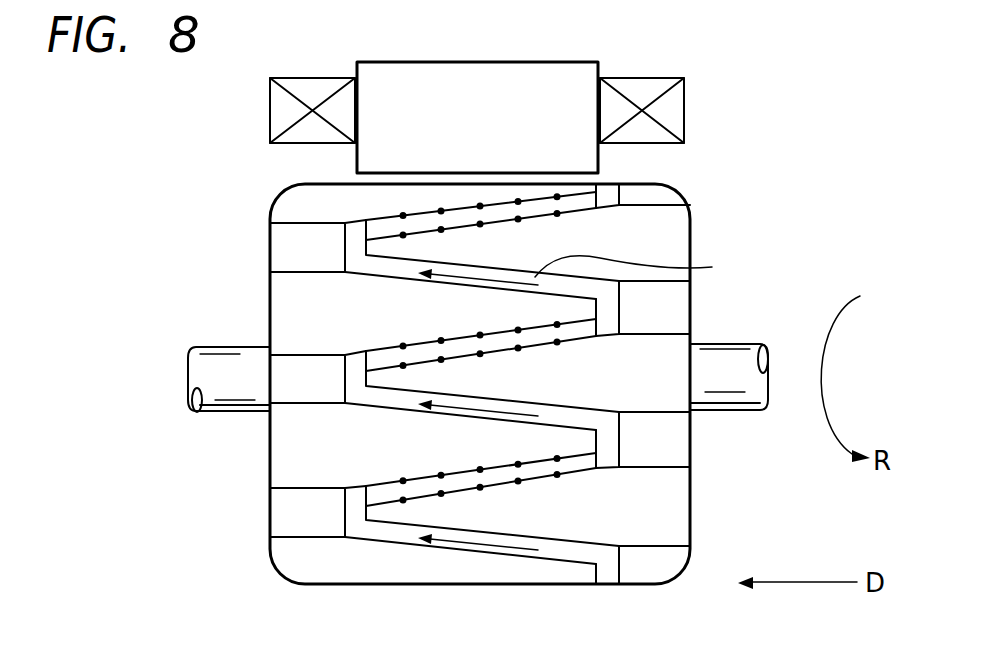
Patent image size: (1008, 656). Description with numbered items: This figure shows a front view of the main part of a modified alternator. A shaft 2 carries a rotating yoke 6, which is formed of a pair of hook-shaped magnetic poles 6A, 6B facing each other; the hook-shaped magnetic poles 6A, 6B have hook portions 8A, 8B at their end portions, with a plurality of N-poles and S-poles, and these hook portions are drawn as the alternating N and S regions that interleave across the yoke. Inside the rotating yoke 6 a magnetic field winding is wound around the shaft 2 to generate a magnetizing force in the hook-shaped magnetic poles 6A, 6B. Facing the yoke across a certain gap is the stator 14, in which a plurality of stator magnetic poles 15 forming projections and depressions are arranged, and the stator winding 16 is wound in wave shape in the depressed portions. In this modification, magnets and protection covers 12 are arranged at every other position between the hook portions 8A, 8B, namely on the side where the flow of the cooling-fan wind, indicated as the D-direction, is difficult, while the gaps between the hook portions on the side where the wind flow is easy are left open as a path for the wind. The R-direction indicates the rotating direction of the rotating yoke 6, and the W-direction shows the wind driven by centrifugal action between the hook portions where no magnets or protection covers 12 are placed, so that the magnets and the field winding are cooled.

The shaft 2 is at (753, 410).
The rotating yoke 6 is at (291, 587).
The hook-shaped magnetic pole 6A is at (681, 228).
The hook-shaped magnetic pole 6B is at (283, 312).
The hook portion 8A is at (407, 517).
The hook portion 8B is at (573, 443).
The protection cover 12 is at (384, 492).
The stator 14 is at (512, 88).
The stator magnetic pole 15 is at (458, 72).
The stator winding 16 is at (679, 101).